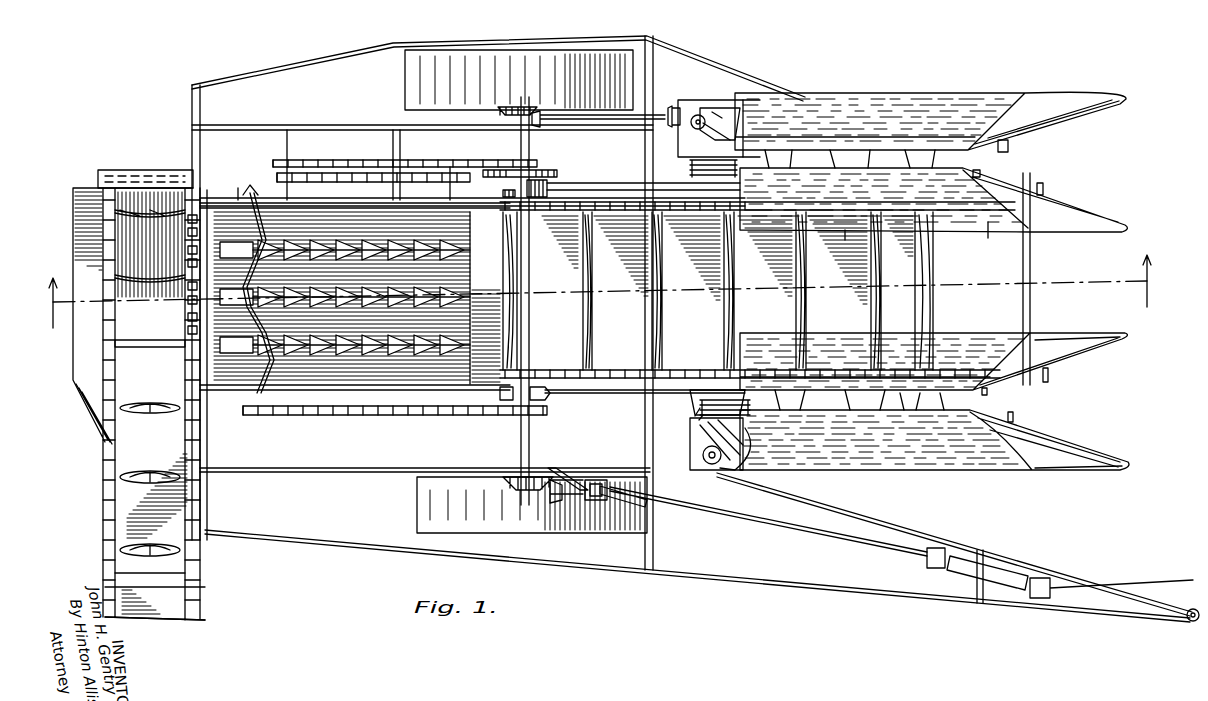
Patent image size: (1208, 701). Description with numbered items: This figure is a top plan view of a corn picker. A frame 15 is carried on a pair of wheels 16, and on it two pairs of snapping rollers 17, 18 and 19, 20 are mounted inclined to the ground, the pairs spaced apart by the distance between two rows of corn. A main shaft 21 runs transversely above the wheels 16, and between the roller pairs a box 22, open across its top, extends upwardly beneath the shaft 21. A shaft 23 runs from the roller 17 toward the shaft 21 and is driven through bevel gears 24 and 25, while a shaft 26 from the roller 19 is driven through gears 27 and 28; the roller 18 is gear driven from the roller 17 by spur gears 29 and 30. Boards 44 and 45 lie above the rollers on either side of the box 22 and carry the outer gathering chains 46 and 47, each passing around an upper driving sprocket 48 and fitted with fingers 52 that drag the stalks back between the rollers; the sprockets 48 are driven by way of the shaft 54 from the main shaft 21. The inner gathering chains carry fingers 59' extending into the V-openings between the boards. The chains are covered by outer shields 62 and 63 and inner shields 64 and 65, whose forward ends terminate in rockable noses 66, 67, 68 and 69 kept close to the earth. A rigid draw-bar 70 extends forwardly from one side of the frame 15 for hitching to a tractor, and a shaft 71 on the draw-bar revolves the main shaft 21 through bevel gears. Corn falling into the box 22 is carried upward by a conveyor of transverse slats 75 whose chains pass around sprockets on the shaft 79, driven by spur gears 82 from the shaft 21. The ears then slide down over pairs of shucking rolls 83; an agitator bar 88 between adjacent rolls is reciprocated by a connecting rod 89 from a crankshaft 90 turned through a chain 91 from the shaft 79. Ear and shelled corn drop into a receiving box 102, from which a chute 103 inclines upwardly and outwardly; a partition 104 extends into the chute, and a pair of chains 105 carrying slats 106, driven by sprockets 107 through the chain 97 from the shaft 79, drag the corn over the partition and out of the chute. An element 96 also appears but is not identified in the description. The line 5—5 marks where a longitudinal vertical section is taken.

The frame 15 is at (355, 55).
The wheels 16 is at (460, 52).
The snapping roller 17 is at (700, 405).
The snapping roller 18 is at (698, 412).
The snapping roller 19 is at (740, 206).
The snapping roller 20 is at (765, 160).
The main shaft 21 is at (518, 130).
The box 22 is at (615, 375).
The shaft 23 is at (635, 400).
The bevel gear 24 is at (548, 396).
The bevel gear 25 is at (505, 402).
The shaft 26 is at (620, 190).
The gear 27 is at (548, 185).
The gear 28 is at (502, 194).
The spur gear 29 is at (712, 378).
The spur gear 30 is at (696, 430).
The board 44 is at (700, 465).
The board 45 is at (690, 148).
The outer gathering chain 46 is at (727, 465).
The outer gathering chain 47 is at (718, 108).
The upper driving sprocket 48 is at (697, 113).
The fingers 52 is at (1008, 148).
The shaft 54 is at (600, 118).
The fingers 59' is at (1059, 272).
The outer shield 62 is at (930, 476).
The outer shield 63 is at (912, 97).
The inner shield 64 is at (900, 340).
The inner shield 65 is at (848, 216).
The nose 66 is at (1095, 470).
The nose 67 is at (1072, 338).
The nose 68 is at (1085, 85).
The nose 69 is at (1070, 213).
The draw-bar 70 is at (1188, 620).
The shaft 71 is at (818, 542).
The transverse slats 75 is at (592, 316).
The shaft 79 is at (530, 147).
The spur gears 82 is at (540, 172).
The shucking rolls 83 is at (410, 225).
The agitator bar 88 is at (360, 240).
The connecting rod 89 is at (300, 250).
The crankshaft 90 is at (243, 192).
The chain 91 is at (315, 418).
The chain 96 is at (268, 178).
The chain 97 is at (345, 162).
The receiving box 102 is at (147, 377).
The chute 103 is at (210, 598).
The partition 104 is at (187, 575).
The chains 105 is at (167, 438).
The slats 106 is at (125, 472).
The sprockets 107 is at (210, 190).
The section line 5— 5 is at (597, 301).